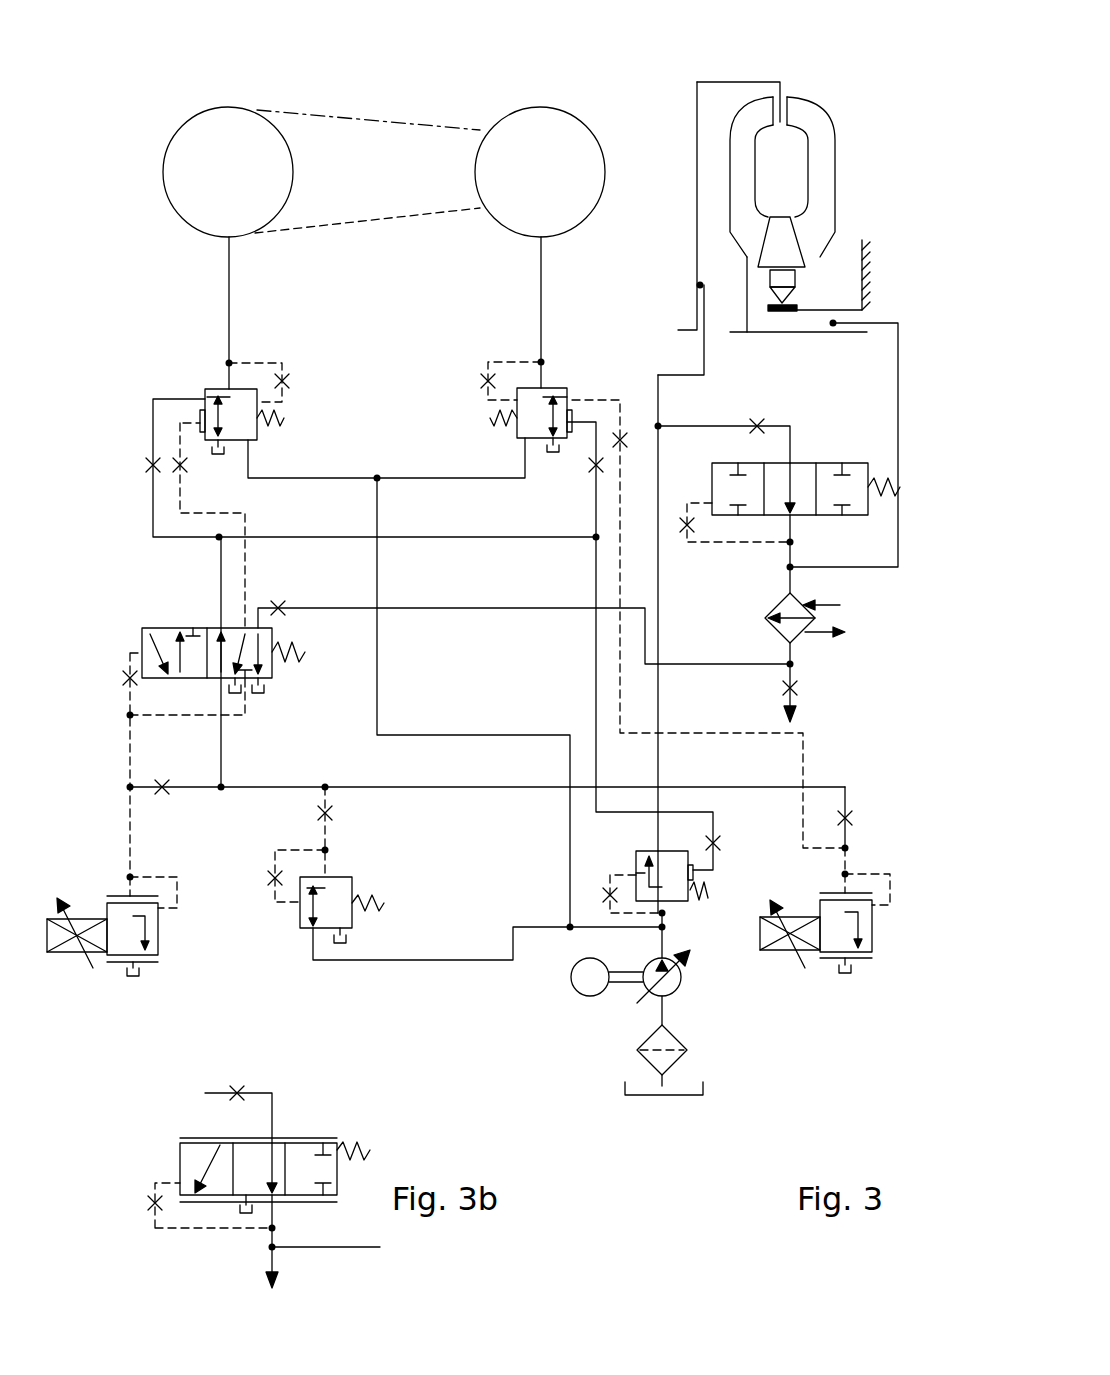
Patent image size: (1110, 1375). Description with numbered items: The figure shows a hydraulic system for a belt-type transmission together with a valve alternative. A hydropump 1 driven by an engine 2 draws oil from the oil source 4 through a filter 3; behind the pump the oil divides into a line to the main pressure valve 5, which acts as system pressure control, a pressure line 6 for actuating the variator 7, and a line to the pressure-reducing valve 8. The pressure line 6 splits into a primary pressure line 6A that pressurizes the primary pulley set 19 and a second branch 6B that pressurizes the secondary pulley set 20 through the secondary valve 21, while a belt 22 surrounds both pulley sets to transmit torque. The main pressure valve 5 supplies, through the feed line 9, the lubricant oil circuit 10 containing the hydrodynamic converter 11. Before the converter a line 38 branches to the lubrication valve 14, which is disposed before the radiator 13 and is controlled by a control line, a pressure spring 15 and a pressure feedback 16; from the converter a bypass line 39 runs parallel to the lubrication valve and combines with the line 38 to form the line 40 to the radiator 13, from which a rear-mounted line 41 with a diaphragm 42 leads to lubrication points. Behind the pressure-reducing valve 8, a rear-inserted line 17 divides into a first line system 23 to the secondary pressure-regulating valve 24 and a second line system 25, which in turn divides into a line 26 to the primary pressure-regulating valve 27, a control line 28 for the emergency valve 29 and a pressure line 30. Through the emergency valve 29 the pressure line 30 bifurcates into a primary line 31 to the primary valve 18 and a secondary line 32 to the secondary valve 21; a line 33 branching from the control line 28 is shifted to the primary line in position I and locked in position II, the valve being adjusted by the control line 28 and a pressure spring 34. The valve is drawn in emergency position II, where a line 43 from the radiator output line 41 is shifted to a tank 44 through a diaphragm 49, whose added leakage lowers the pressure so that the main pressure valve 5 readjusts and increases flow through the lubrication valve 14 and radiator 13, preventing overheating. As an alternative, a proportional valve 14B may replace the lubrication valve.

In FIG. 3, the hydropump 1 is at (682, 972).
In FIG. 3, the engine 2 is at (577, 992).
In FIG. 3, the filter 3 is at (676, 1038).
In FIG. 3, the oil source 4 is at (703, 1095).
In FIG. 3, the main pressure valve 5 is at (636, 851).
In FIG. 3, the pressure line 6 is at (377, 725).
In FIG. 3, the primary pressure line 6A is at (228, 278).
In FIG. 3, the second branch 6B is at (541, 277).
In FIG. 3, the variator 7 is at (590, 116).
In FIG. 3, the pressure-reducing valve 8 is at (352, 885).
In FIG. 3, the feed line 9 is at (662, 718).
In FIG. 3, the lubricant oil circuit 10 is at (670, 368).
In FIG. 3, the hydrodynamic converter 11 is at (807, 110).
In FIG. 3, the radiator 13 is at (768, 618).
In FIG. 3, the lubrication valve 14 is at (712, 475).
In FIG. 3B, the proportional valve 14B is at (180, 1158).
In FIG. 3, the pressure spring 15 is at (878, 468).
In FIG. 3B, the pressure spring 15 is at (347, 1140).
In FIG. 3, the pressure feedback 16 is at (740, 545).
In FIG. 3B, the pressure feedback 16 is at (212, 1230).
In FIG. 3, the rear-inserted line 17 is at (325, 852).
In FIG. 3, the primary valve 18 is at (205, 389).
In FIG. 3, the primary pulley set 19 is at (195, 148).
In FIG. 3, the secondary pulley set 20 is at (507, 135).
In FIG. 3, the secondary valve 21 is at (548, 388).
In FIG. 3, the belt 22 is at (392, 122).
In FIG. 3, the first line system 23 is at (370, 785).
In FIG. 3, the secondary pressure-regulating valve 24 is at (872, 948).
In FIG. 3, the second line system 25 is at (292, 787).
In FIG. 3, the line 26 is at (132, 855).
In FIG. 3, the primary pressure-regulating valve 27 is at (158, 945).
In FIG. 3, the control line 28 is at (128, 652).
In FIG. 3, the emergency valve 29 is at (155, 628).
In FIG. 3, the pressure line 30 is at (222, 738).
In FIG. 3, the primary line 31 is at (152, 522).
In FIG. 3, the secondary line 32 is at (583, 423).
In FIG. 3, the line 33 is at (250, 590).
In FIG. 3, the pressure spring 34 is at (300, 652).
In FIG. 3, the line 38 is at (725, 425).
In FIG. 3B, the line 38 is at (217, 1092).
In FIG. 3, the bypass line 39 is at (898, 333).
In FIG. 3B, the bypass line 39 is at (315, 1247).
In FIG. 3, the line 40 is at (792, 585).
In FIG. 3B, the line 40 is at (270, 1265).
In FIG. 3, the rear-mounted line 41 is at (795, 655).
In FIG. 3, the diaphragm 42 is at (797, 683).
In FIG. 3, the line 43 is at (458, 607).
In FIG. 3, the tank 44 is at (258, 695).
In FIG. 3, the diaphragm 49 is at (290, 606).